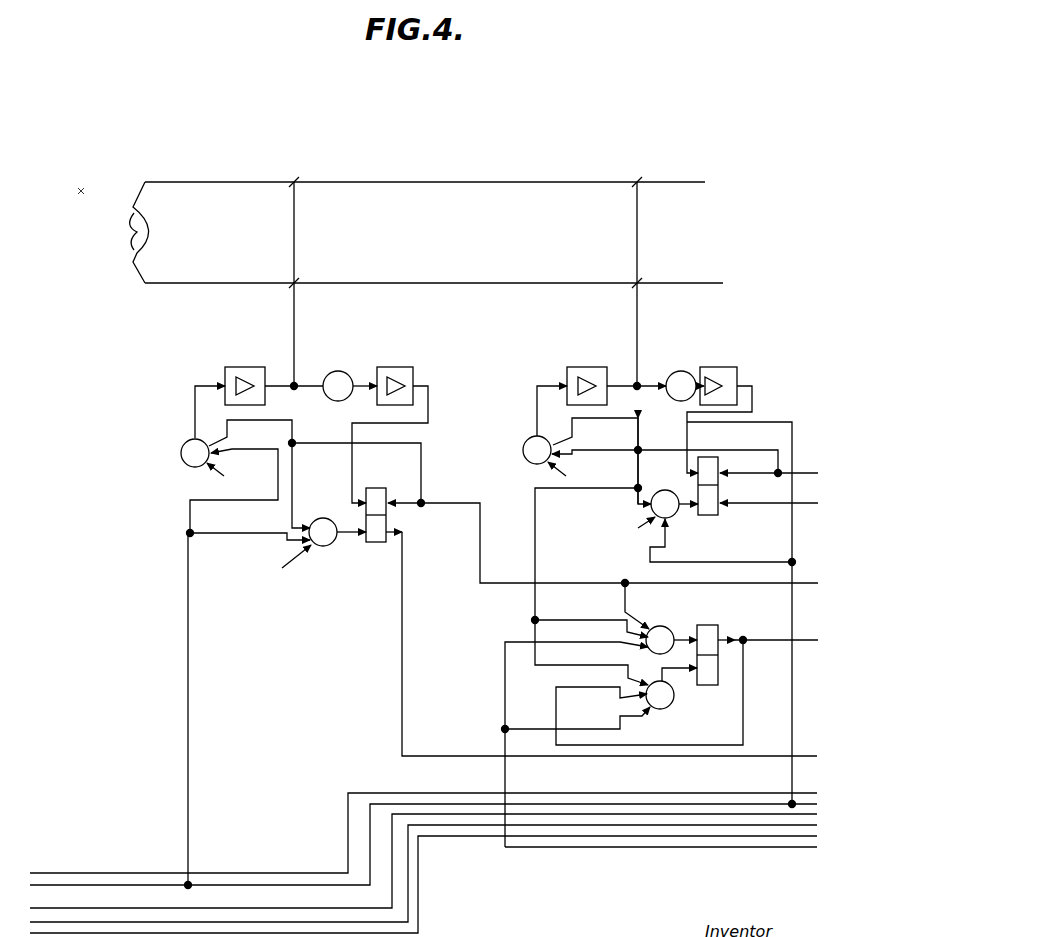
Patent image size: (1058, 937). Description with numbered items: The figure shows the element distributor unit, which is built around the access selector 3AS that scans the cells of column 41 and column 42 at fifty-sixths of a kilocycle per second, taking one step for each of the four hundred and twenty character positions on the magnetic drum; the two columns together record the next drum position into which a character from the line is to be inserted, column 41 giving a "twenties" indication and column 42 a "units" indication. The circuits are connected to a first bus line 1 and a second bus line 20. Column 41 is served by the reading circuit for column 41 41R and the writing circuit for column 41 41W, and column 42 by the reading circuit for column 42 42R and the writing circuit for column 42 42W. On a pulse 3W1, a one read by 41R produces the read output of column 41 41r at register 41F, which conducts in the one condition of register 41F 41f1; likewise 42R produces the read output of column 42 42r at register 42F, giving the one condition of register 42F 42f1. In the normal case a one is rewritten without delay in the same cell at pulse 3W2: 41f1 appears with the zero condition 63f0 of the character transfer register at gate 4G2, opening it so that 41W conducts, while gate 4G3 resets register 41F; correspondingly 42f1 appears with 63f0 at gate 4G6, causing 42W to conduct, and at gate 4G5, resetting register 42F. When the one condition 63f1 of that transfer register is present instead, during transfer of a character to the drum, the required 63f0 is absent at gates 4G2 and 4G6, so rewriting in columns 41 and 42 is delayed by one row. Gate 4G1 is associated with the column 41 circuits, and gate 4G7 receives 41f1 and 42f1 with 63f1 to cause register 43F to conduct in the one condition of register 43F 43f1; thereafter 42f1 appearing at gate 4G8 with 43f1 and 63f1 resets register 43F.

The first bus line 1 is at (425, 171).
The second bus line 20 is at (425, 296).
The access selector 3AS is at (113, 232).
The column 41 is at (292, 274).
The column 42 is at (632, 273).
The writing circuit for column 41 41W is at (231, 392).
The pulse 3W1 is at (339, 371).
The reading circuit for column 41 41R is at (383, 375).
The gate 4G1 is at (309, 406).
The read output of column 41 41r is at (369, 449).
The gate 4G2 is at (168, 453).
The register 41F is at (589, 609).
The gate 4G3 is at (337, 544).
The writing circuit for column 42 42W is at (601, 391).
The reading circuit for column 42 42R is at (716, 375).
The read output of column 42 42r is at (702, 432).
The gate 4G6 is at (514, 451).
The register 42F is at (728, 613).
The gate 4G5 is at (681, 513).
The gate 4G7 is at (671, 626).
The register 43F is at (740, 643).
The gate 4G8 is at (673, 704).
The "1" condition of register 41F 41f1 is at (429, 524).
The "0" condition of register 63F 63f0 is at (491, 666).
The pulse 3W2 is at (431, 520).
The "1" condition of register 42F 42f1 is at (592, 554).
The "1" condition of register 63F 63f1 is at (660, 744).
The "1" condition of register 43F 43f1 is at (649, 692).